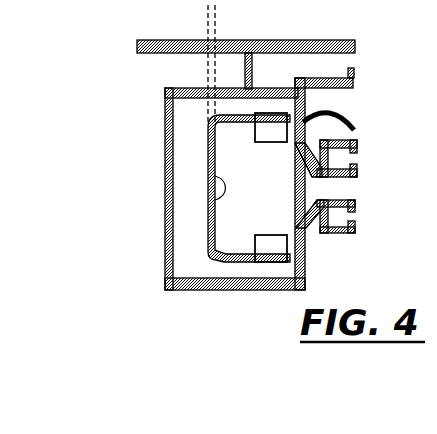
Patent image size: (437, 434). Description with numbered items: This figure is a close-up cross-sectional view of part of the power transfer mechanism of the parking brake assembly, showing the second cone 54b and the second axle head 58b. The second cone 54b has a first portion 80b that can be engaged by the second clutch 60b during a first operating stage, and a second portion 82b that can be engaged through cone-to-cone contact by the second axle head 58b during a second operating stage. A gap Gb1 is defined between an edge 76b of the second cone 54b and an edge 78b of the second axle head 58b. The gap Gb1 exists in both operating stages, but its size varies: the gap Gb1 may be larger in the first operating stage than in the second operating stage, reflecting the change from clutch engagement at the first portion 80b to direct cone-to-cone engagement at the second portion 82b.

The gap Gb1 is at (190, 8).
The second cone 54b is at (178, 148).
The second axle head 58b is at (233, 221).
The second clutch 60b is at (275, 121).
The edge of the second cone 76b is at (208, 202).
The edge of the second axle head 78b is at (208, 159).
The first portion 80b is at (266, 115).
The second portion 82b is at (210, 250).